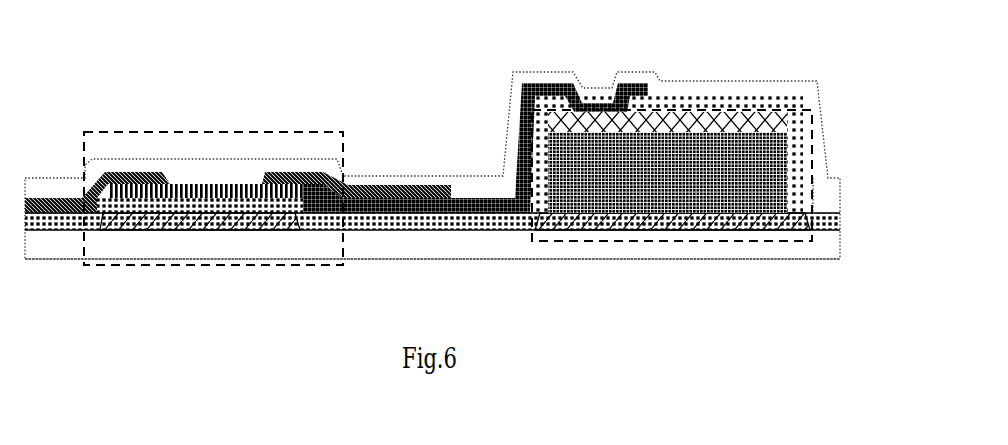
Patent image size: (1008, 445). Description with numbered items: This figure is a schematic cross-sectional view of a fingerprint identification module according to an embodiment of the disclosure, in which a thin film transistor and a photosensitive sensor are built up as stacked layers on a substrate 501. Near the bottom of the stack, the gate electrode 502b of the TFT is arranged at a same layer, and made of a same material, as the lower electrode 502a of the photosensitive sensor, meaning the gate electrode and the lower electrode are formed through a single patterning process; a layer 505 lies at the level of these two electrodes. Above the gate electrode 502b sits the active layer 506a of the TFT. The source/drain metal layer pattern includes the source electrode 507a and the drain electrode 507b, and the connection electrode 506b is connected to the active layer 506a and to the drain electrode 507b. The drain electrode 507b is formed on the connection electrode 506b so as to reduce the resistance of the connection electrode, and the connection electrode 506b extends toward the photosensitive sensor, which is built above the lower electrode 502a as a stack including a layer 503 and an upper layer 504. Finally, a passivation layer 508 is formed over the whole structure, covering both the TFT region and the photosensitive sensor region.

The substrate 501 is at (662, 239).
The lower electrode 502a is at (612, 220).
The gate electrode 502b is at (213, 223).
The light emitting layer 503 is at (780, 183).
The cathode layer 504 is at (778, 123).
The buffer layer 505 is at (377, 222).
The active layer 506a is at (218, 188).
The connection electrode 506b is at (467, 203).
The source electrode 507a is at (115, 172).
The drain electrode 507b is at (373, 195).
The passivation layer 508 is at (672, 87).